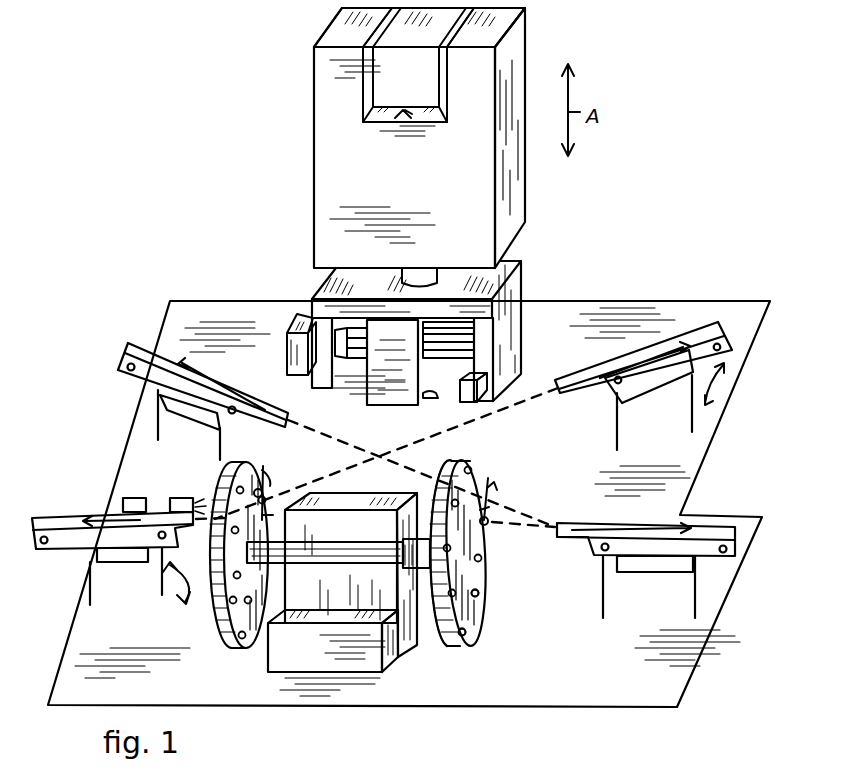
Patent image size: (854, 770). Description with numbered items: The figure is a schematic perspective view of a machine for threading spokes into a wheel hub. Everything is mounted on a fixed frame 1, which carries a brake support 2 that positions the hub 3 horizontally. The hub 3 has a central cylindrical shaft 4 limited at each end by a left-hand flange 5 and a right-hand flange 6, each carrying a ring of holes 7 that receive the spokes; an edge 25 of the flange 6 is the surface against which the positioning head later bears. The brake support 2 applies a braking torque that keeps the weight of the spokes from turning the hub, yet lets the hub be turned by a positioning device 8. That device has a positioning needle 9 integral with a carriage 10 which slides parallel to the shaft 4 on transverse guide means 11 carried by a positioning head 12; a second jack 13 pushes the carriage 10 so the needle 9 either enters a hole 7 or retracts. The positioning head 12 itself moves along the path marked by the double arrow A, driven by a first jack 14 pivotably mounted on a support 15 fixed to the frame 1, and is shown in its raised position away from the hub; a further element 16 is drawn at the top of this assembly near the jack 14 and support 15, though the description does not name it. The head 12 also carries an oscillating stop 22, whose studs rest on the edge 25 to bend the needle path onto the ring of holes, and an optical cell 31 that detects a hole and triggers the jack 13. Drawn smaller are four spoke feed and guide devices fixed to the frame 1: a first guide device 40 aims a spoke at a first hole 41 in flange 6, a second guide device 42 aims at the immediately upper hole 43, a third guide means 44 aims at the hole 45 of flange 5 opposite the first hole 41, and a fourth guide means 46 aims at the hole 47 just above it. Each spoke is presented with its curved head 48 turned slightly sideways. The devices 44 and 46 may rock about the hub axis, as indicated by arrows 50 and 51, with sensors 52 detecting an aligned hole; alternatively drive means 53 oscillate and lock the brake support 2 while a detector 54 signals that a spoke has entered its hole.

The fixed frame 1 is at (670, 652).
The brake support 2 is at (318, 582).
The hub 3 is at (492, 593).
The central cylindrical shaft 4 is at (383, 558).
The left-hand flange 5 is at (222, 614).
The right-hand flange 6 is at (484, 645).
The holes 7 is at (478, 640).
The positioning device 8 is at (300, 132).
The positioning needle 9 is at (427, 392).
The carriage 10 is at (295, 322).
The transverse guide means 11 is at (313, 338).
The positioning head 12 is at (316, 290).
The jack (second jack) 13 is at (382, 364).
The jack (first jack) 14 is at (440, 84).
The support 15 is at (330, 64).
The slot 16 is at (446, 82).
The oscillating stop 22 is at (470, 380).
The edge of flange 25 is at (447, 647).
The optical cell 31 is at (495, 384).
The first guide device 40 is at (714, 524).
The first hole 41 is at (540, 494).
The second guide device 42 is at (128, 345).
The immediately upper hole 43 is at (490, 480).
The third guide means 44 is at (52, 516).
The hole of left-hand flange 45 is at (270, 518).
The fourth guide means 46 is at (681, 338).
The hole 47 is at (259, 478).
The curved head 48 is at (688, 365).
The arrow 50 is at (176, 603).
The arrow 51 is at (728, 389).
The sensors 52 is at (178, 498).
The drive means 53 is at (390, 652).
The detector 54 is at (131, 498).